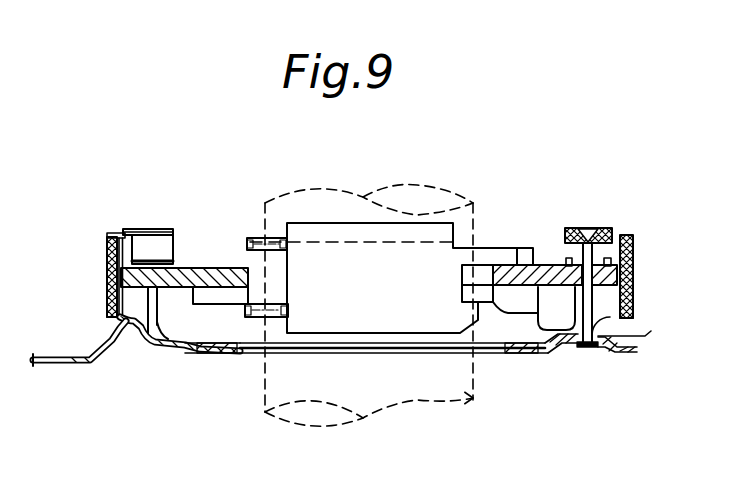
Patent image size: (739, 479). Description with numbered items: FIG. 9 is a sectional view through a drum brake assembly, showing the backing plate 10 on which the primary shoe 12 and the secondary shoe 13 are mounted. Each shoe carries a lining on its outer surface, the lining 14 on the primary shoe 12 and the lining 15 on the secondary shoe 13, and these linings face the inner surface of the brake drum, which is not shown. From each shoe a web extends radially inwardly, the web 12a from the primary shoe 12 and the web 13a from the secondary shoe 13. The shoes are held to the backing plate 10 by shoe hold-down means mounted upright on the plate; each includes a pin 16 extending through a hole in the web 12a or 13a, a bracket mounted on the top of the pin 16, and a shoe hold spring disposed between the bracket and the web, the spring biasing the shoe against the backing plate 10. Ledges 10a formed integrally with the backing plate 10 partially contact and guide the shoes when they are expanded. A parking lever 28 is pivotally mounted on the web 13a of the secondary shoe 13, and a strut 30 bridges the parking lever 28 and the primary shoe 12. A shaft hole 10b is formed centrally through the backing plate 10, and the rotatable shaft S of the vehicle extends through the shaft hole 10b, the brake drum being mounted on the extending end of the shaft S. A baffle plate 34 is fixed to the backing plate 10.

The backing plate 10 is at (538, 352).
The ledges 10a is at (135, 338).
The shaft hole 10b is at (243, 357).
The primary shoe 12 is at (107, 250).
The web 12a is at (210, 266).
The secondary shoe 13 is at (642, 247).
The web 13a is at (560, 265).
The lining 14 is at (110, 290).
The lining 15 is at (633, 296).
The pin 16 is at (163, 328).
The parking lever 28 is at (515, 303).
The strut 30 is at (403, 323).
The baffle plate 34 is at (53, 363).
The rotatable shaft S is at (473, 400).